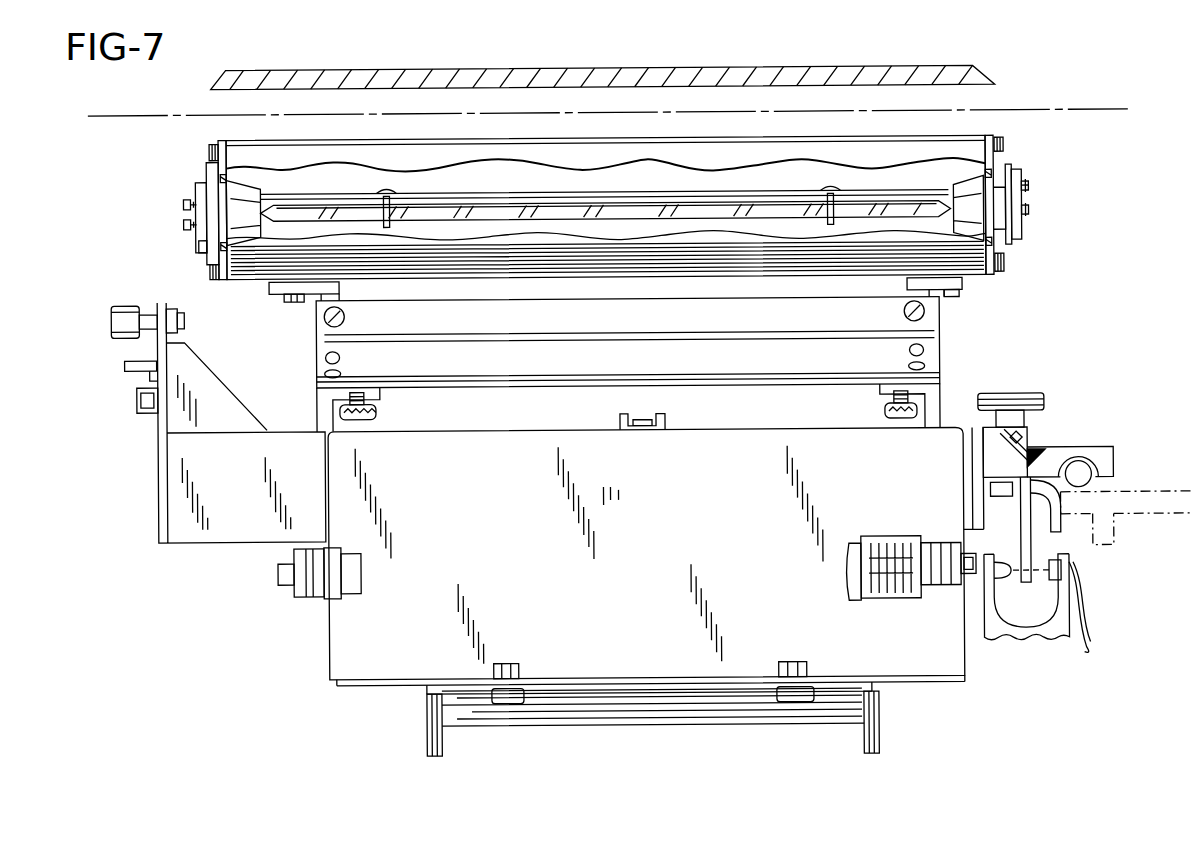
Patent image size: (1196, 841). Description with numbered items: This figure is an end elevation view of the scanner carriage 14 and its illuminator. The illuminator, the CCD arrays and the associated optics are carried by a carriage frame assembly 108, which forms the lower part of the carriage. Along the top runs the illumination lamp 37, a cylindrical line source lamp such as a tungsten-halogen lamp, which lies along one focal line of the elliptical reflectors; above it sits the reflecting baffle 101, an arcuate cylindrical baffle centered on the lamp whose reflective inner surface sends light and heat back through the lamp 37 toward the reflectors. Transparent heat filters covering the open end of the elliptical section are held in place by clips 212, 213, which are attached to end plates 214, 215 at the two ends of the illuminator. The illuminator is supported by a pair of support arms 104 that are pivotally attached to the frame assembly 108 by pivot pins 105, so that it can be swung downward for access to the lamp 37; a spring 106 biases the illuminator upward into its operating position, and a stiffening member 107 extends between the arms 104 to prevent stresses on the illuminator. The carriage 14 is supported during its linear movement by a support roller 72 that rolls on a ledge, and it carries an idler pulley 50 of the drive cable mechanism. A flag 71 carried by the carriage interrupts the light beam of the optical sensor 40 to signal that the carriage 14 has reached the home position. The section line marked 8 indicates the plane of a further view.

The section line 8- 8 is at (100, 150).
The scanner carriage 14 is at (170, 688).
The illumination lamp 37 is at (703, 207).
The optical sensor 40 is at (1052, 590).
The idler pulley 50 is at (1013, 400).
The flag 71 is at (1030, 542).
The support roller 72 is at (125, 303).
The reflecting baffle 101 is at (872, 193).
The support arm 104 is at (320, 416).
The pivot pin 105 is at (278, 573).
The spring 106 is at (905, 590).
The stiffening member 107 is at (825, 357).
The carriage frame assembly 108 is at (432, 733).
The clip 212 is at (220, 137).
The clip 213 is at (1000, 125).
The end plate 214 is at (218, 272).
The end plate 215 is at (993, 280).